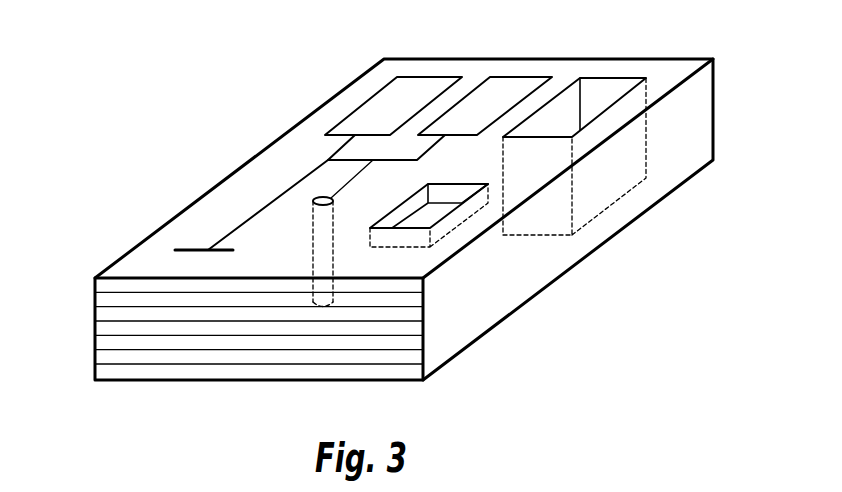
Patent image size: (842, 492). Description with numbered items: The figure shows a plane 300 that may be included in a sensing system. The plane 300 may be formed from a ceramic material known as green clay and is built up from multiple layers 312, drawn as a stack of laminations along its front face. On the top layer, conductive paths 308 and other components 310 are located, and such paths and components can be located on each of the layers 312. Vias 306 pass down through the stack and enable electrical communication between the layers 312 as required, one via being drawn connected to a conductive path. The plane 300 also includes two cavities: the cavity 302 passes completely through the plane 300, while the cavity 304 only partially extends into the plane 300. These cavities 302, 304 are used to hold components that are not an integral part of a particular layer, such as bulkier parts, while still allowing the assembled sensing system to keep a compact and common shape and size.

The plane 300 is at (675, 223).
The cavity 302 is at (607, 85).
The cavity 304 is at (445, 218).
The vias 306 is at (319, 196).
The conductive paths 308 is at (270, 203).
The other components 310 is at (364, 103).
The layers 312 is at (82, 278).